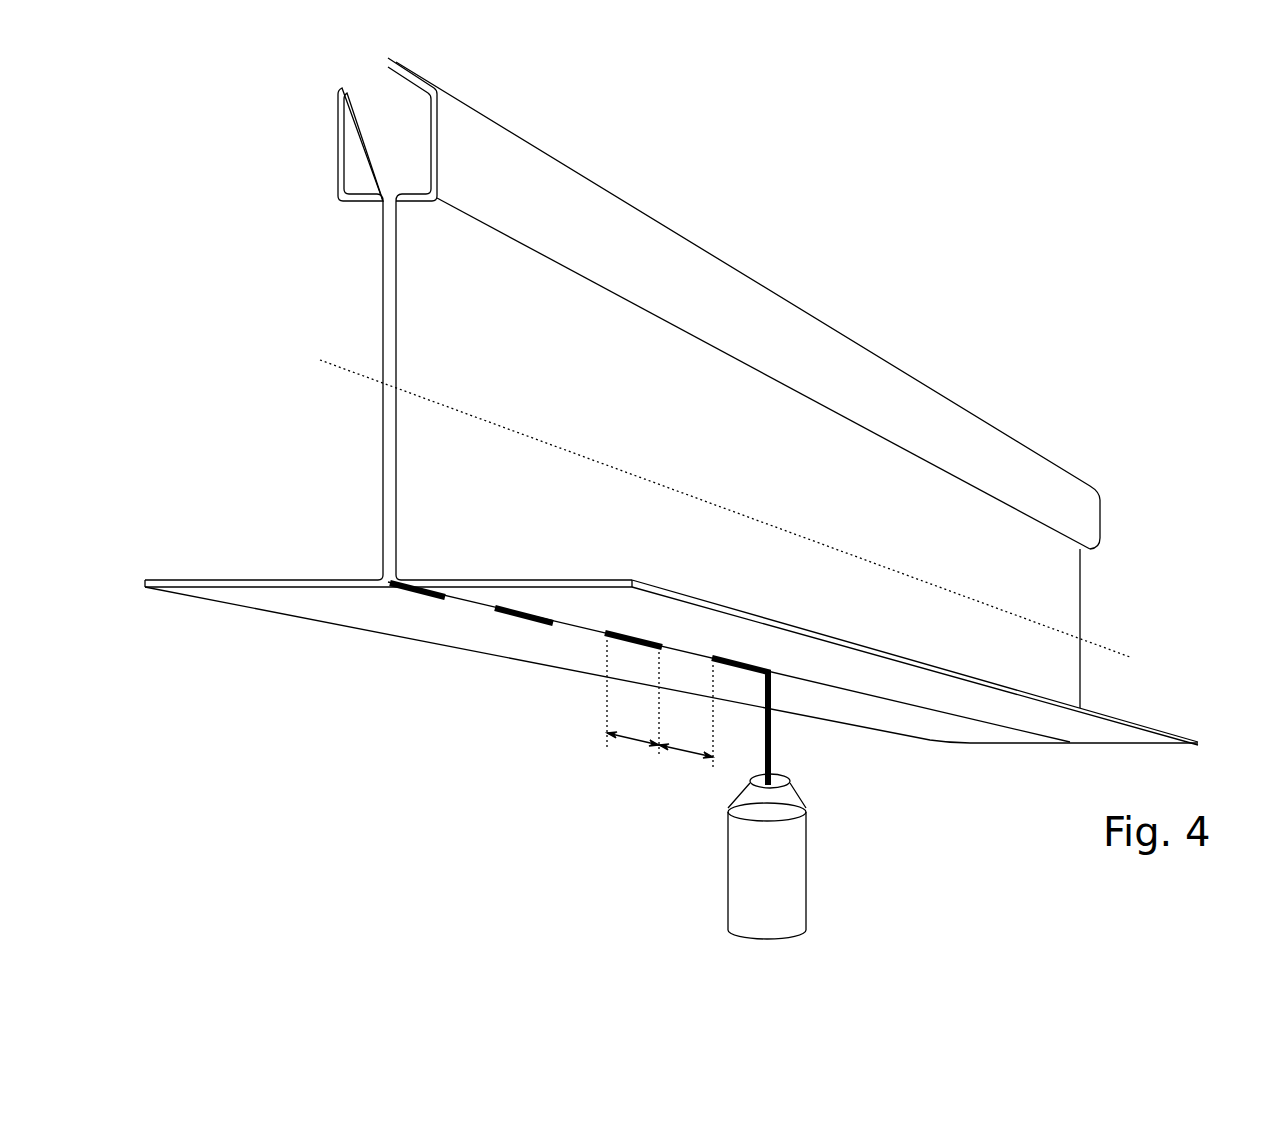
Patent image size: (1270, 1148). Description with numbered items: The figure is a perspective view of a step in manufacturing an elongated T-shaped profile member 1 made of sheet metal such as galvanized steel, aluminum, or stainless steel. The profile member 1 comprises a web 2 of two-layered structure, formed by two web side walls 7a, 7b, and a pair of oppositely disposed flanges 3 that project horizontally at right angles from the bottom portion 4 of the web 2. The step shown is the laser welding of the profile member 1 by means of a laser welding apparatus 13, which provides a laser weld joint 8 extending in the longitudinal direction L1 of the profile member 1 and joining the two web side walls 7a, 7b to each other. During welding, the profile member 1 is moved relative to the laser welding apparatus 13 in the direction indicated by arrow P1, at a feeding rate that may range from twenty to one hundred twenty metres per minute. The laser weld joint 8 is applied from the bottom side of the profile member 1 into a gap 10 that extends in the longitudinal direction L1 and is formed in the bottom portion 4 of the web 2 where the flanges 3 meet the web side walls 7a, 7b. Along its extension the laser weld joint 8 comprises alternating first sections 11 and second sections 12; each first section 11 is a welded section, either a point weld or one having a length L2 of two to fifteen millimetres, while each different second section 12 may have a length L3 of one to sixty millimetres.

The profile member 1 is at (1012, 376).
The web 2 is at (772, 475).
The flanges 3 is at (207, 580).
The bottom portion 4 is at (414, 561).
The web side wall 7a is at (382, 335).
The web side wall 7b is at (397, 308).
The laser weld joint 8 is at (534, 632).
The gap 10 is at (461, 616).
The first sections 11 is at (636, 640).
The second sections 12 is at (686, 652).
The laser welding apparatus 13 is at (782, 880).
The longitudinal direction L1 is at (1105, 652).
The length of first section L2 is at (633, 698).
The length of second section L3 is at (686, 717).
The direction of relative movement P1 is at (967, 360).